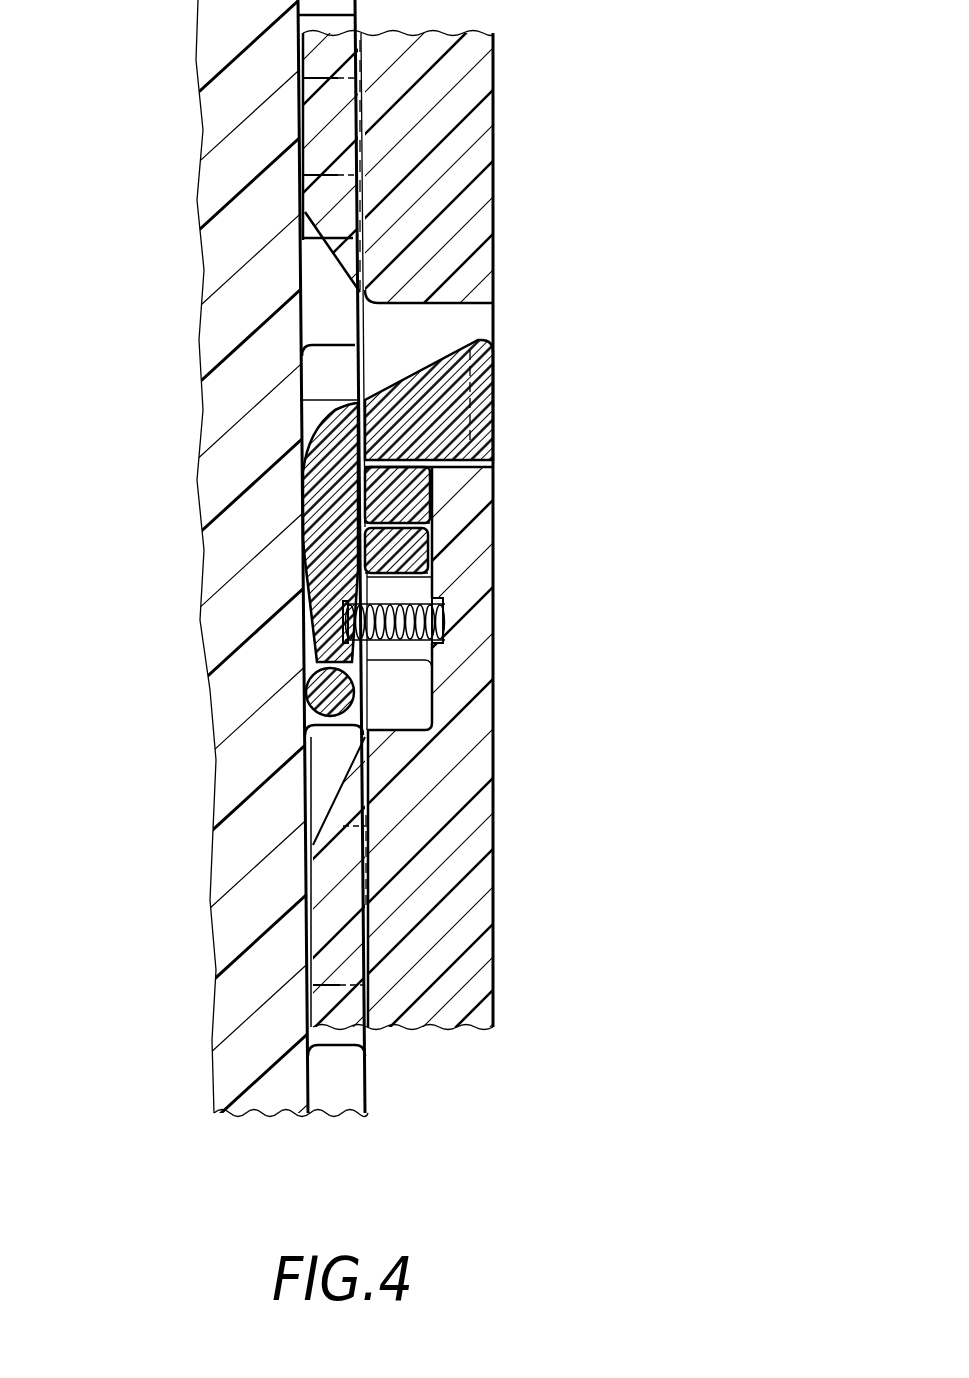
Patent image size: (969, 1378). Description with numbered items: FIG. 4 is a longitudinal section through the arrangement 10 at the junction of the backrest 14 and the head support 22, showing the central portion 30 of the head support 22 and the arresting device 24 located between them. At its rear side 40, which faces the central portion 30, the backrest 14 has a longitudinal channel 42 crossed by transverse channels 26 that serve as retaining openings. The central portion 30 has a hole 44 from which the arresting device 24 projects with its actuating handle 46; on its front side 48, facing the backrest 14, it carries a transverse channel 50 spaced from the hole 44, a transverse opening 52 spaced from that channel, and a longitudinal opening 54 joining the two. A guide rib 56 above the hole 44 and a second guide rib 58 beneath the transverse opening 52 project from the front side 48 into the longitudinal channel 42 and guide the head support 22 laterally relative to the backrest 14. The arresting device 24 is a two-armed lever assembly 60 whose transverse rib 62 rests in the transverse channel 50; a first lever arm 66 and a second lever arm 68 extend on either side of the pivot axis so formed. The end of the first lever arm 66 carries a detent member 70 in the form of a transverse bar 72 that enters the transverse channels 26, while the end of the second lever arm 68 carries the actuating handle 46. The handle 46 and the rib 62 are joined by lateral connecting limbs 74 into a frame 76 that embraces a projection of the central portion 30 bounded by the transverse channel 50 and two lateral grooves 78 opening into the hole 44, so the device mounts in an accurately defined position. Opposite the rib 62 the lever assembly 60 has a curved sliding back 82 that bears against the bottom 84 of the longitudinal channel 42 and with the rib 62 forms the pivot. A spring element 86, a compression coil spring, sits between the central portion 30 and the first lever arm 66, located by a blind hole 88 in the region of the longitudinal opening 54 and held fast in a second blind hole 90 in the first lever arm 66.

The downhole tool 10 is at (650, 103).
The backrest 14 is at (256, 1000).
The head support 22 is at (514, 612).
The arresting device 24 is at (514, 412).
The transverse channels 26 is at (320, 23).
The central portion 30 is at (447, 840).
The rear side 40 is at (365, 925).
The longitudinal channel 42 is at (300, 790).
The hole 44 is at (457, 323).
The actuating handle 46 is at (487, 380).
The front side 48 is at (406, 548).
The transverse channel 50 is at (395, 487).
The transverse opening 52 is at (410, 705).
The longitudinal opening 54 is at (433, 595).
The guide rib 56 is at (322, 160).
The second guide rib 58 is at (335, 848).
The two-armed lever assembly 60 is at (306, 458).
The transverse rib 62 is at (407, 550).
The first lever arm 66 is at (331, 597).
The second lever arm 68 is at (374, 423).
The detent member 70 is at (321, 693).
The transverse bar 72 is at (385, 703).
The lateral connecting limbs 74 is at (370, 463).
The frame 76 is at (436, 421).
The lateral grooves 78 is at (410, 497).
The curved sliding back 82 is at (66, 491).
The bottom 84 is at (330, 782).
The spring element 86 is at (440, 612).
The blind hole 88 is at (428, 645).
The blind hole 90 is at (324, 633).